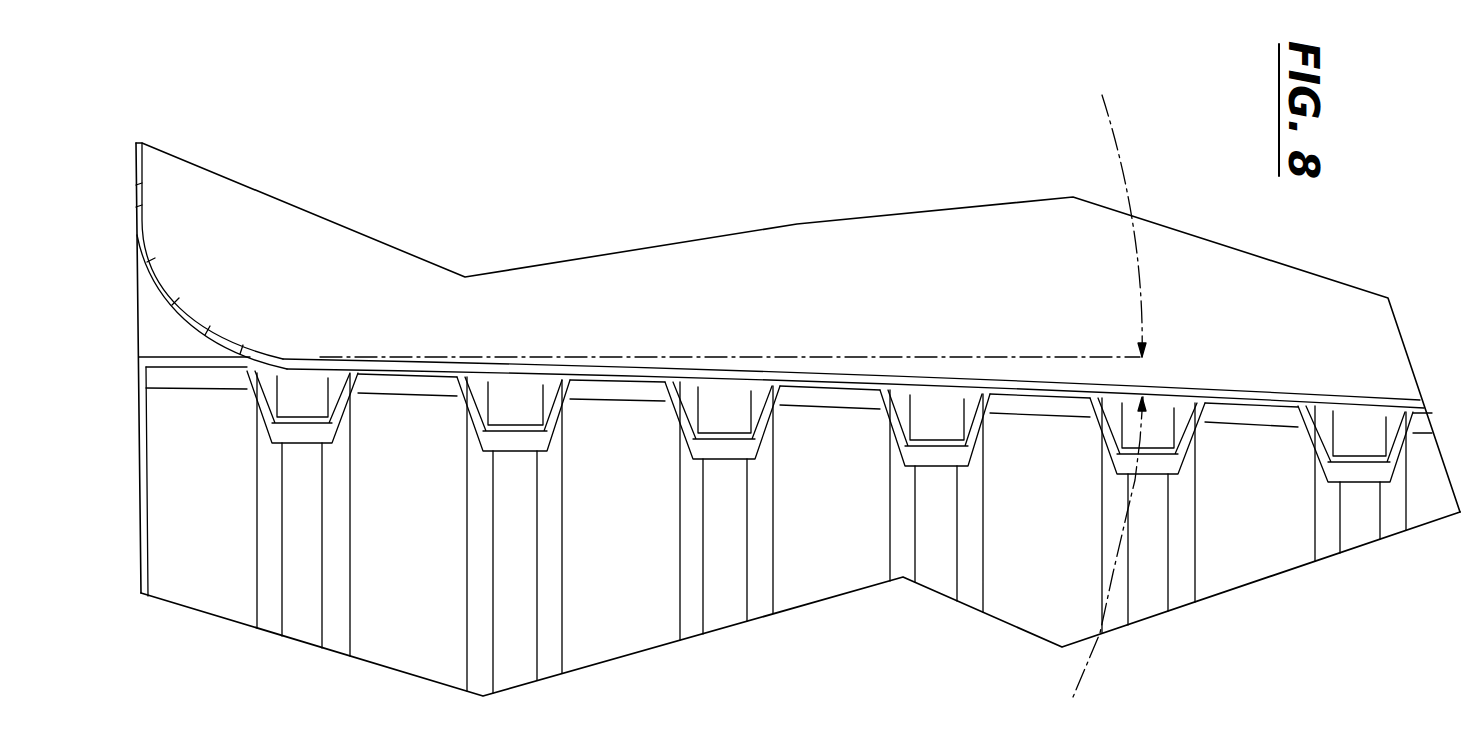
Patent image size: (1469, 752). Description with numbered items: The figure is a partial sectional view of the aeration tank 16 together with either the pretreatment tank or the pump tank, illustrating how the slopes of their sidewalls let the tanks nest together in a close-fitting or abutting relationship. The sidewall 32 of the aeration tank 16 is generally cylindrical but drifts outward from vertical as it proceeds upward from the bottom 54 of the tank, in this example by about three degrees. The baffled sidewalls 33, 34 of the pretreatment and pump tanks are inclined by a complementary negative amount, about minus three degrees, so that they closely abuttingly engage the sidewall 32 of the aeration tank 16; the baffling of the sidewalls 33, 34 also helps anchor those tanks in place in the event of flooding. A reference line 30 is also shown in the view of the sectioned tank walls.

The aeration tank 16 is at (625, 301).
The offset distance 30 is at (1142, 372).
The sidewall 32 is at (728, 366).
The baffled sidewall 33 is at (830, 393).
The baffled sidewall 34 is at (789, 532).
The bottom 54 is at (140, 168).